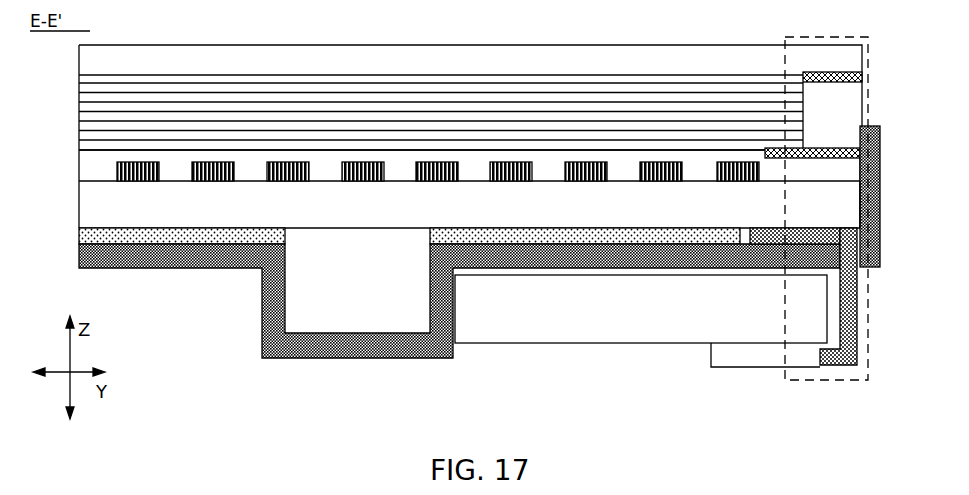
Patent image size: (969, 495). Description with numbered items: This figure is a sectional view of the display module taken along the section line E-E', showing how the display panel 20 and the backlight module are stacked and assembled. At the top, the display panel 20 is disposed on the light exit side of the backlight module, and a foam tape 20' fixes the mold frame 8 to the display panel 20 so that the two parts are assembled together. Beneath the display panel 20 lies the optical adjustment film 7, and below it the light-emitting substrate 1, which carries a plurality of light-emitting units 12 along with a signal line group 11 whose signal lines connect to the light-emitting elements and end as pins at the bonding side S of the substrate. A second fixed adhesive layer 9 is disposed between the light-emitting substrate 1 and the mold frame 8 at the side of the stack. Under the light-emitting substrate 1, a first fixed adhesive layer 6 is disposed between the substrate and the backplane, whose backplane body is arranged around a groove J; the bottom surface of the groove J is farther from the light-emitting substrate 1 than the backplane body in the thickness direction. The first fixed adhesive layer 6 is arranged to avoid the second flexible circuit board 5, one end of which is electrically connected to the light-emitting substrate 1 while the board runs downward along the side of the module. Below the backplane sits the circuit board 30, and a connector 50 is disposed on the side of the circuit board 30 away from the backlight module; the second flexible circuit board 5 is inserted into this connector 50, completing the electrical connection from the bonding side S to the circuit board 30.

The display panel 20 is at (470, 124).
The foam tape 20' is at (865, 104).
The optical adjustment film 7 is at (79, 83).
The light-emitting substrate 1 is at (79, 150).
The light-emitting unit 12 is at (585, 181).
The second fixed adhesive layer 9 is at (873, 154).
The mold frame 8 is at (850, 122).
The signal line group 11 is at (855, 192).
The first fixed adhesive layer 6 is at (507, 237).
The groove J is at (302, 270).
The circuit board 30 is at (645, 310).
The connector 50 is at (728, 357).
The second flexible circuit board 5 is at (858, 306).
The bonding side S is at (820, 381).